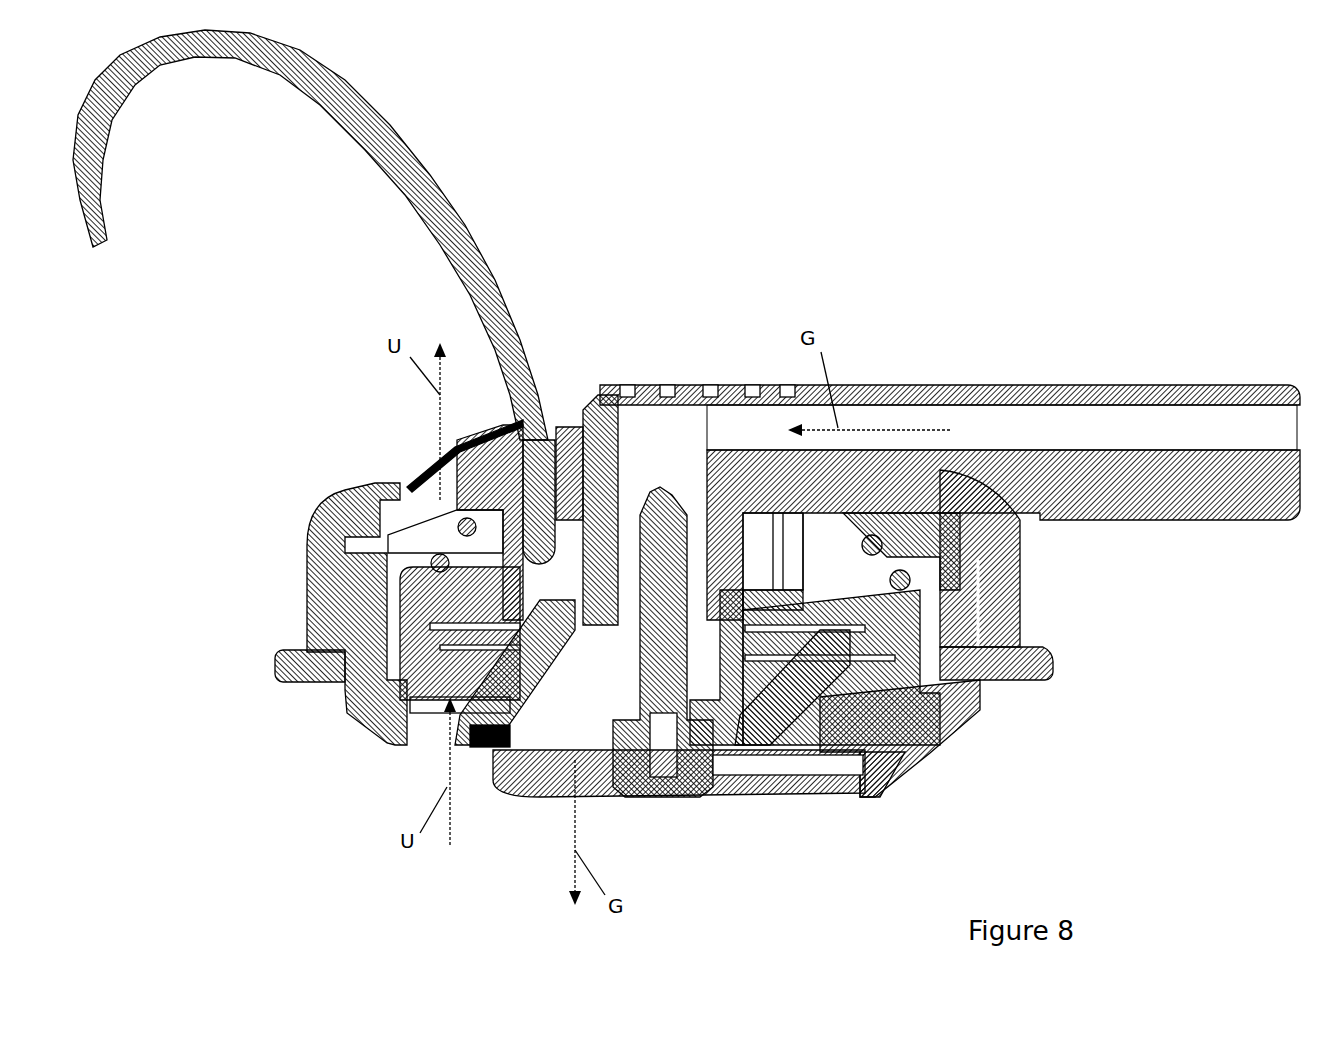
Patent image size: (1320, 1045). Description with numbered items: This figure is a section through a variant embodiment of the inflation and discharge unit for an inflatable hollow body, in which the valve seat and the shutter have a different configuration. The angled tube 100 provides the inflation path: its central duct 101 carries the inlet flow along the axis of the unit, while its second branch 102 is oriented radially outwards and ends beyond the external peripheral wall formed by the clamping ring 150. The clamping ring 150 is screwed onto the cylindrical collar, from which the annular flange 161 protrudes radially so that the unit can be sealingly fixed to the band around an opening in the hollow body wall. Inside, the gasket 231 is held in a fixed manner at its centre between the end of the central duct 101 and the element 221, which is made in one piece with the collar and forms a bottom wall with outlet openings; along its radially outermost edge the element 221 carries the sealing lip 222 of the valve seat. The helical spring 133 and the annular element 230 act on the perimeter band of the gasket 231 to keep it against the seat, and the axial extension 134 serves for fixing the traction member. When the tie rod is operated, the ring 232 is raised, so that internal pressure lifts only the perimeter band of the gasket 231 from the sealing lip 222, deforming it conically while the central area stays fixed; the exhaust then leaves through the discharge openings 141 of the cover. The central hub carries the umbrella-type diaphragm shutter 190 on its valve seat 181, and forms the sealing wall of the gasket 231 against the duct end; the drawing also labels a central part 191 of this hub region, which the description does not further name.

The angled tube 100 is at (963, 380).
The central duct 101 is at (598, 408).
The second branch 102 is at (1177, 385).
The helical spring 133 is at (455, 522).
The axial extension 134 is at (570, 430).
The discharge openings 141 is at (430, 467).
The clamping ring 150 is at (322, 532).
The annular flange 161 is at (292, 655).
The valve seat 181 is at (493, 770).
The diaphragm shutter 190 is at (770, 800).
The pin 191 is at (676, 515).
The element 221 is at (897, 793).
The sealing lip 222 is at (915, 725).
The annular element 230 is at (1022, 598).
The gasket 231 is at (345, 710).
The ring 232 is at (990, 680).